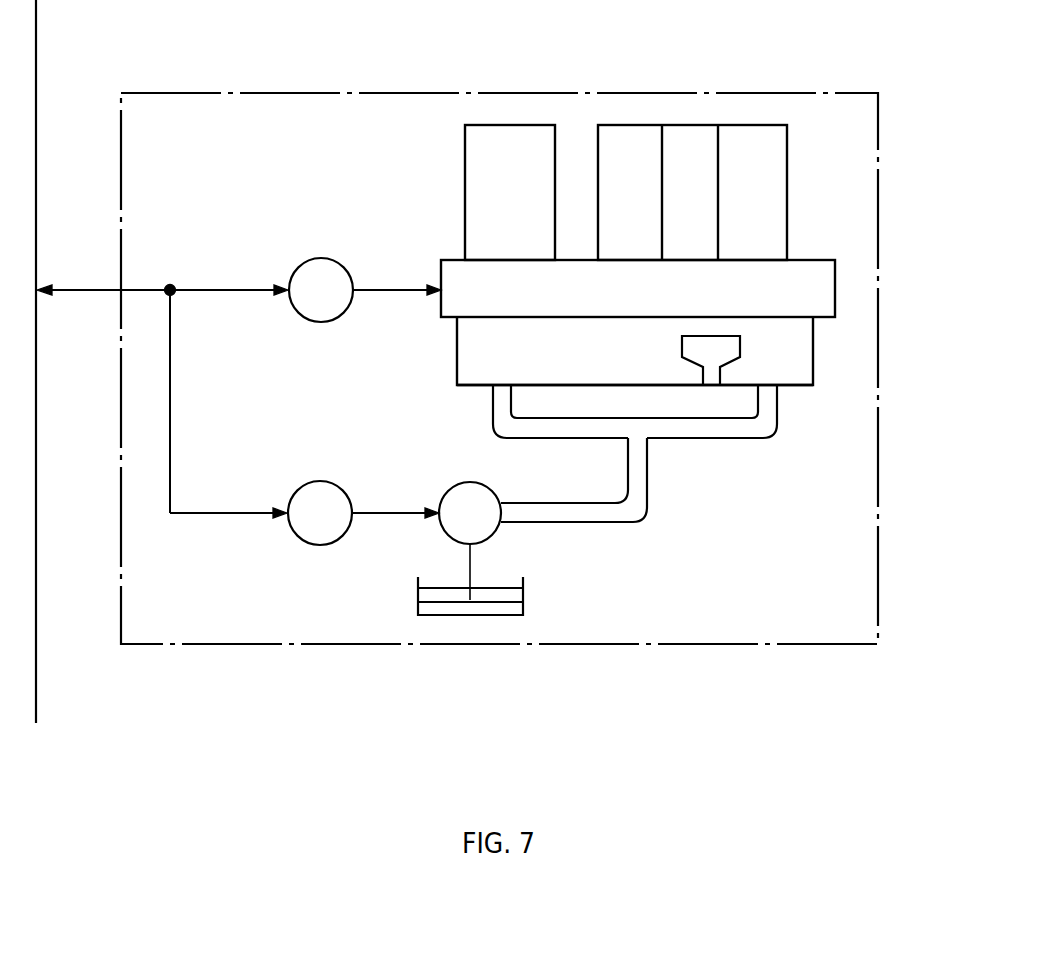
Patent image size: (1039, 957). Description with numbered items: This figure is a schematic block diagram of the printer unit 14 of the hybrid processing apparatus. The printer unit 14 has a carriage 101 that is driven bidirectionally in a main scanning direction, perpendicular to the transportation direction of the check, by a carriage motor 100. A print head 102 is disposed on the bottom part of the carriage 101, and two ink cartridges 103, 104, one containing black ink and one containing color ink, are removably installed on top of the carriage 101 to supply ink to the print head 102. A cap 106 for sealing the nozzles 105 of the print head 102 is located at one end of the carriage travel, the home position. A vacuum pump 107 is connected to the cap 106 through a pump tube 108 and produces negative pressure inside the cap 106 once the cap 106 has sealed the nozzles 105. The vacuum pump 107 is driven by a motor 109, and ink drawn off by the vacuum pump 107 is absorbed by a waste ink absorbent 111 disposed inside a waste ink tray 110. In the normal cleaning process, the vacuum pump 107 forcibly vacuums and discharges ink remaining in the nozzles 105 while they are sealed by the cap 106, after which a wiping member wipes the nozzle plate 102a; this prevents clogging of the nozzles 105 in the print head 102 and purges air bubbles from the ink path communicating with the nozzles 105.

The printer unit 14 is at (878, 160).
The carriage motor 100 is at (323, 257).
The carriage 101 is at (835, 288).
The print head 102 is at (813, 345).
The nozzle plate 102a is at (798, 385).
The ink cartridge 103 is at (520, 125).
The ink cartridge 104 is at (755, 125).
The nozzles 105 is at (713, 385).
The cap 106 is at (688, 438).
The vacuum pump 107 is at (472, 481).
The pump tube 108 is at (640, 512).
The motor 109 is at (322, 481).
The waste ink tray 110 is at (523, 588).
The waste ink absorbent 111 is at (437, 588).